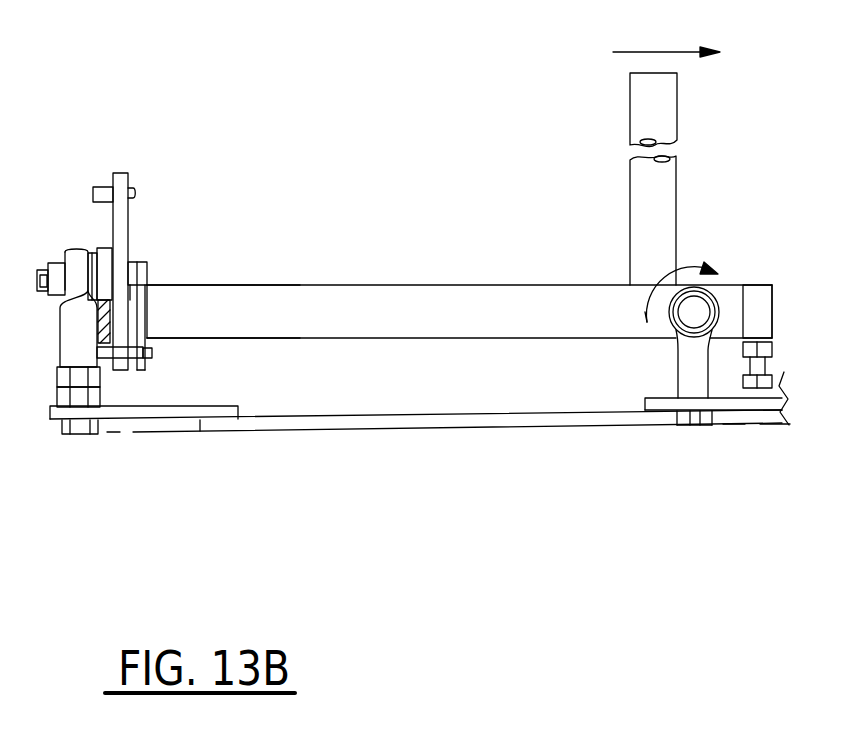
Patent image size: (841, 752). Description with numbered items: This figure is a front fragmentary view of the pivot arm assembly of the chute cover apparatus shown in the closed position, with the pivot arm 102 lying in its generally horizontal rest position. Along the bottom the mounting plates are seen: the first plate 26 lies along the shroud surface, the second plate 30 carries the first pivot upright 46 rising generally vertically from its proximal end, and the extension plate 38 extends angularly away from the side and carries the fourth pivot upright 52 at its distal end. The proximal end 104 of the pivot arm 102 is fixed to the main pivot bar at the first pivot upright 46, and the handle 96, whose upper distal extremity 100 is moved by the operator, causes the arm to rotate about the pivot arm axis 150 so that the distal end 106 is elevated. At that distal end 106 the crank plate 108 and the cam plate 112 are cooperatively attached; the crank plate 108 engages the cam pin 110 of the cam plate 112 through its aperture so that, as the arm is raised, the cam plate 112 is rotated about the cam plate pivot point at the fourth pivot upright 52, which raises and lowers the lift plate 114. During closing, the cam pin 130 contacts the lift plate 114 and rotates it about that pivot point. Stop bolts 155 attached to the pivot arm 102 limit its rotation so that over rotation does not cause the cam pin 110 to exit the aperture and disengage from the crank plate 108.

The first plate 26 is at (337, 417).
The second plate 30 is at (733, 407).
The extension plate 38 is at (150, 388).
The first pivot upright 46 is at (690, 370).
The fourth pivot upright 52 is at (67, 328).
The handle 96 is at (670, 196).
The upper distal extremity of the handle 100 is at (672, 108).
The pivot arm 102 is at (385, 293).
The proximal end of pivot arm 104 is at (733, 295).
The distal end of pivot arm 106 is at (177, 292).
The crank plate 108 is at (143, 312).
The cam pin 110 is at (150, 355).
The cam plate 112 is at (123, 217).
The lift plate 114 is at (102, 247).
The cam pin 130 is at (133, 192).
The pivot arm axis 150 is at (697, 308).
The stop bolts 155 is at (775, 345).